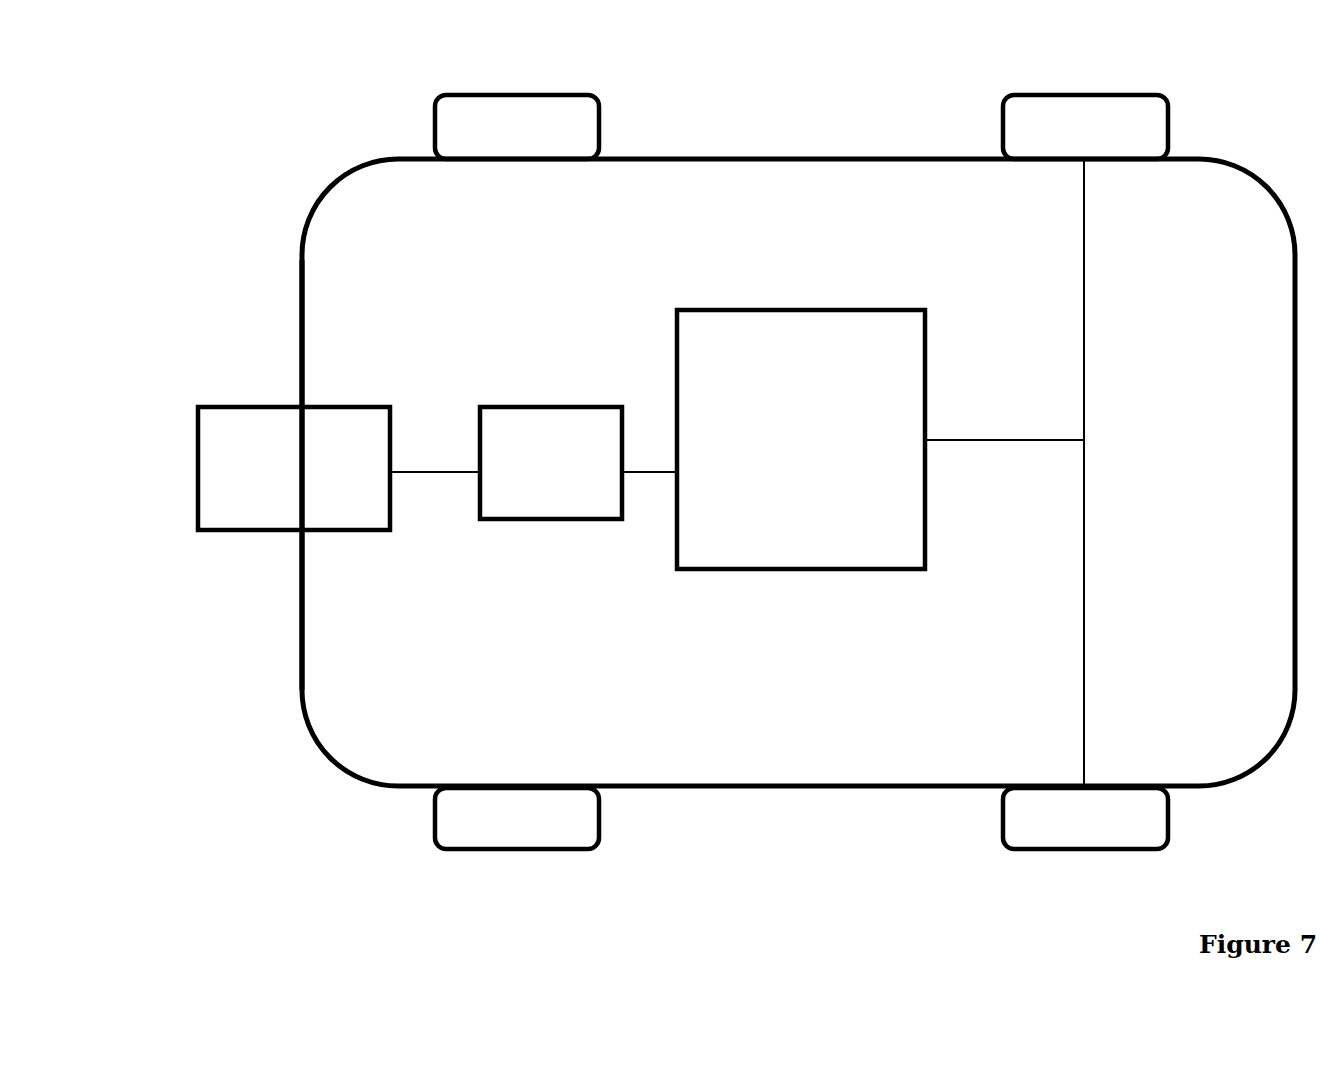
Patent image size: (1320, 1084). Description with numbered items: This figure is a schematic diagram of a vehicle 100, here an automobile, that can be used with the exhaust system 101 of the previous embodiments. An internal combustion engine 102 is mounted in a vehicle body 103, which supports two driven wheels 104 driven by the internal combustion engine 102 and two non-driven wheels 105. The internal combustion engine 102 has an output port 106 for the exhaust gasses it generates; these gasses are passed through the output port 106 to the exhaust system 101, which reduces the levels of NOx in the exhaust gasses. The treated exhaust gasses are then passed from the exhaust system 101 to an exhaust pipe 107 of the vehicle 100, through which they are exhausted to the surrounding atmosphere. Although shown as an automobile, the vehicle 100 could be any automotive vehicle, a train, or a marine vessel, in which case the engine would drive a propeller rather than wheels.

The vehicle 100 is at (327, 188).
The exhaust system 101 is at (480, 407).
The internal combustion engine 102 is at (676, 358).
The vehicle body 103 is at (300, 283).
The driven wheels 104 is at (1003, 130).
The non-driven wheels 105 is at (435, 135).
The output port 106 is at (675, 472).
The exhaust pipe 107 is at (196, 518).